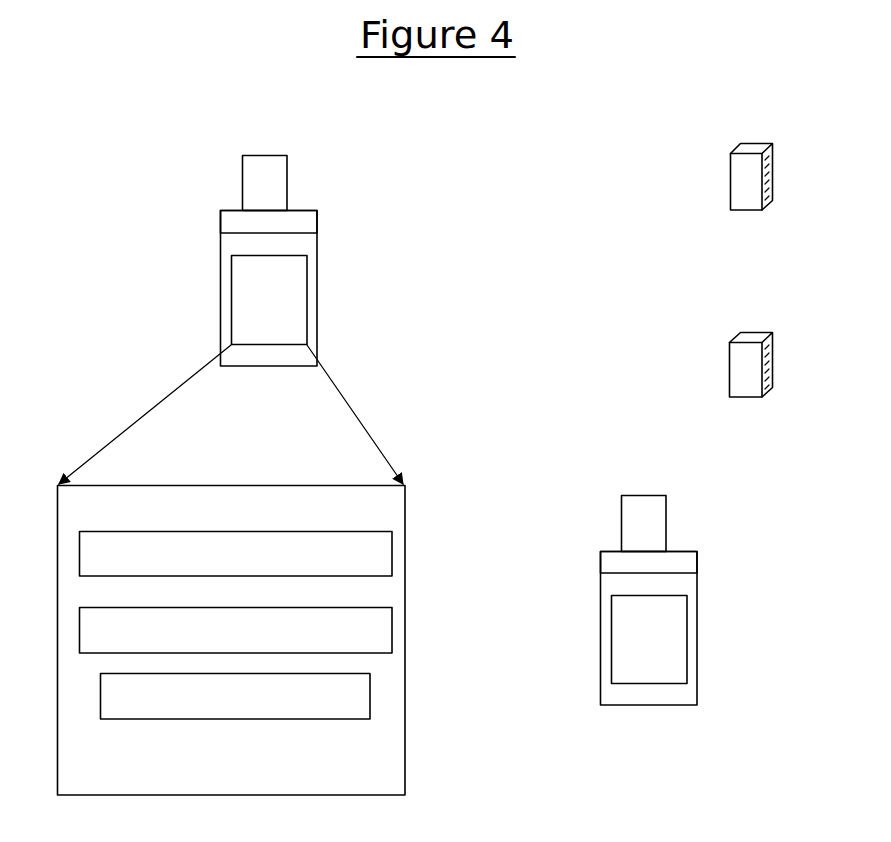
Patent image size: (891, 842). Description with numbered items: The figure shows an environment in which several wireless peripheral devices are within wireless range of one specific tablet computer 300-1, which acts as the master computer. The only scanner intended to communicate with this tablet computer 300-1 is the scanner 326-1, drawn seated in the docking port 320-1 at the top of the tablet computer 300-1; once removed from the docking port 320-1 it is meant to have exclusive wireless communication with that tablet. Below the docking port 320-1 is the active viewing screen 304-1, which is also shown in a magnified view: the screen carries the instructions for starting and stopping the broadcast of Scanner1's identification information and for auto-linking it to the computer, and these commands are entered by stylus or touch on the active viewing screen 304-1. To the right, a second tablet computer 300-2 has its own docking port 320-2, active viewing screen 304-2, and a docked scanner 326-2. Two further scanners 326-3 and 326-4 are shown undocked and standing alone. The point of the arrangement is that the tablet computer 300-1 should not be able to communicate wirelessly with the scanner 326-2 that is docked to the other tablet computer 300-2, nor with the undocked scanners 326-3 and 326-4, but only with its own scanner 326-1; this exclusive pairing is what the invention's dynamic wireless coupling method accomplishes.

The tablet computer 300-1 is at (220, 266).
The docking port 320-1 is at (297, 222).
The scanner 326-1 is at (274, 170).
The active viewing screen 304-1 is at (297, 287).
The tablet computer 300-2 is at (600, 683).
The docking port 320-2 is at (676, 562).
The scanner 326-2 is at (653, 510).
The active viewing screen 304-2 is at (675, 660).
The scanner 326-3 is at (775, 161).
The scanner 326-4 is at (775, 340).